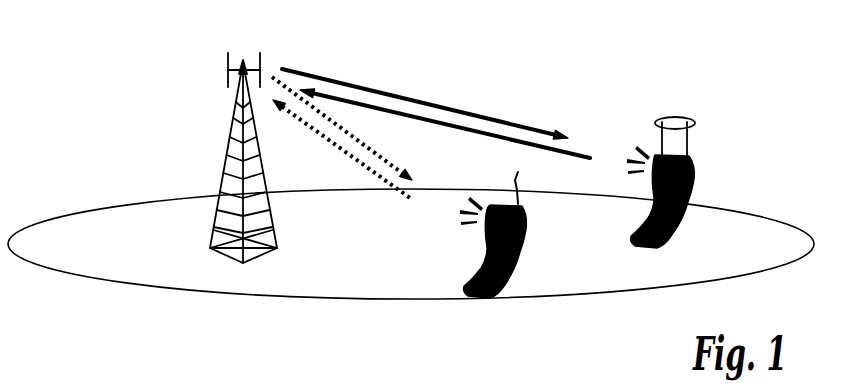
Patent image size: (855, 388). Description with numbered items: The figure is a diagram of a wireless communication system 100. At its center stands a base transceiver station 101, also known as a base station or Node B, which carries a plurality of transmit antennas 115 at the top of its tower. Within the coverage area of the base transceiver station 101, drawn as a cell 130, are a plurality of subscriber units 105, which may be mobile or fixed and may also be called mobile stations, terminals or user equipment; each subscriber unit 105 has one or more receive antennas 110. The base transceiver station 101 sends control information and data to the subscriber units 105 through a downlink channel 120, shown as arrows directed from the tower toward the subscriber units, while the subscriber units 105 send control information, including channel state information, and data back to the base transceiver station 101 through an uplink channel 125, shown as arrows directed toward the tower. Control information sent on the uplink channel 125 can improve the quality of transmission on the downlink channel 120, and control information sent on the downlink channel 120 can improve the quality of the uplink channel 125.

The wireless communication system 100 is at (101, 53).
The base transceiver station 101 is at (212, 243).
The subscriber units 105 is at (525, 220).
The receive antennas 110 is at (518, 179).
The transmit antennas 115 is at (227, 62).
The downlink channel 120 is at (428, 93).
The uplink channel 125 is at (338, 150).
The cell 130 is at (378, 294).